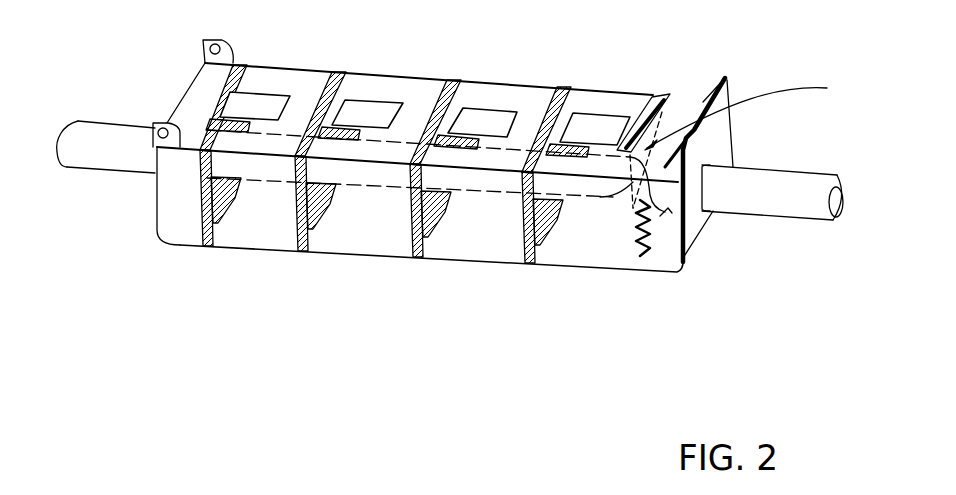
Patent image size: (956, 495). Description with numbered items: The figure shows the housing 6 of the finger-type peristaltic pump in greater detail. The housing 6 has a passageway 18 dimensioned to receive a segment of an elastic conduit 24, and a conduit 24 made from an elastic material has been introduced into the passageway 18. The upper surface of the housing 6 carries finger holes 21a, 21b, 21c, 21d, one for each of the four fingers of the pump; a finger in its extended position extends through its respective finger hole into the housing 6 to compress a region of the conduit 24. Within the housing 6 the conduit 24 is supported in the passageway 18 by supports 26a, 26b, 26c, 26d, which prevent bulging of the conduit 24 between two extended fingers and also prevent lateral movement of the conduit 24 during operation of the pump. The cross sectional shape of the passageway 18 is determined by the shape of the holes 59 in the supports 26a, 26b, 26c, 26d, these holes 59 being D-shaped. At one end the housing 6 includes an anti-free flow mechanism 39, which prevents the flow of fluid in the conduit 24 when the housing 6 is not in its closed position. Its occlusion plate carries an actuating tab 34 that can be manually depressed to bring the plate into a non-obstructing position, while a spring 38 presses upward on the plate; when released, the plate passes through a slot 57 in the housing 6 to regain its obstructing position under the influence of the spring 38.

The housing 6 is at (156, 204).
The passageway 18 is at (688, 205).
The finger hole 21a is at (253, 107).
The finger hole 21b is at (365, 112).
The finger hole 21c is at (480, 120).
The finger hole 21d is at (600, 127).
The conduit 24 is at (107, 143).
The support 26a is at (213, 212).
The support 26b is at (313, 220).
The support 26c is at (427, 227).
The support 26d is at (537, 233).
The actuating tab 34 is at (653, 95).
The spring 38 is at (662, 213).
The anti-free flow mechanism 39 is at (748, 114).
The slot 57 is at (660, 115).
The hole 59 is at (208, 163).